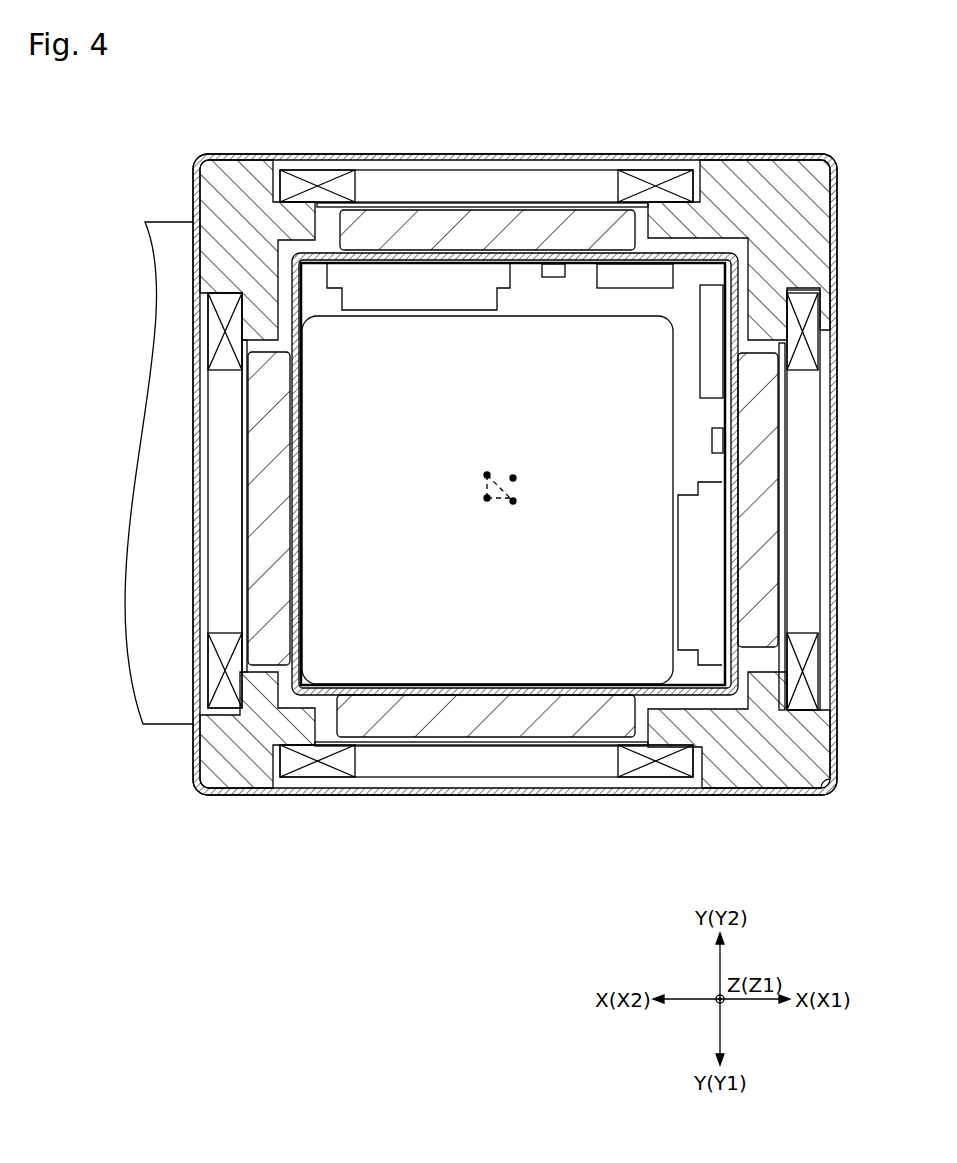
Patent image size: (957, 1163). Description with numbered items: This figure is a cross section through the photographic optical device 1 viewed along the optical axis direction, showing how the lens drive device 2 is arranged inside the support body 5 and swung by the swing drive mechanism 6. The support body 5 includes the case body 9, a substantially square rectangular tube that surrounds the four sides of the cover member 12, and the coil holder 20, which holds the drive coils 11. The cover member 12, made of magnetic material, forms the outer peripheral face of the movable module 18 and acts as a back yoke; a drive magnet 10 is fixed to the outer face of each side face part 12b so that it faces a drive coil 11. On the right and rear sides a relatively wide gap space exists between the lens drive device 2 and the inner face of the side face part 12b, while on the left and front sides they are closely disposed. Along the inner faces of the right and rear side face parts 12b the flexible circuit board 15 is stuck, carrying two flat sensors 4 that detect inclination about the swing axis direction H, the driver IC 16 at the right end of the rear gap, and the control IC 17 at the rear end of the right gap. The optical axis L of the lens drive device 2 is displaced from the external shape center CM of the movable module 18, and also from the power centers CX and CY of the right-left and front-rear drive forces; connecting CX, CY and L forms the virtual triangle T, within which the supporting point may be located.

The photographic optical device 1 is at (775, 104).
The lens drive device 2 is at (482, 403).
The sensor 4 is at (373, 311).
The support body 5 is at (468, 797).
The swing drive mechanism 6 is at (560, 165).
The case body 9 is at (468, 797).
The drive magnet 10 is at (482, 200).
The drive coil 11 is at (655, 170).
The cover member 12 is at (290, 496).
The side face part 12b is at (413, 249).
The circuit board 15 is at (712, 460).
The driver IC 16 is at (615, 289).
The control IC 17 is at (700, 385).
The movable module 18 is at (720, 249).
The coil holder 20 is at (212, 156).
The power center of front-rear drive forces CY is at (487, 475).
The center of external shape of movable module CM is at (513, 478).
The power center of right-left drive forces CX is at (513, 501).
The optical axis L is at (487, 498).
The virtual triangle T is at (501, 500).